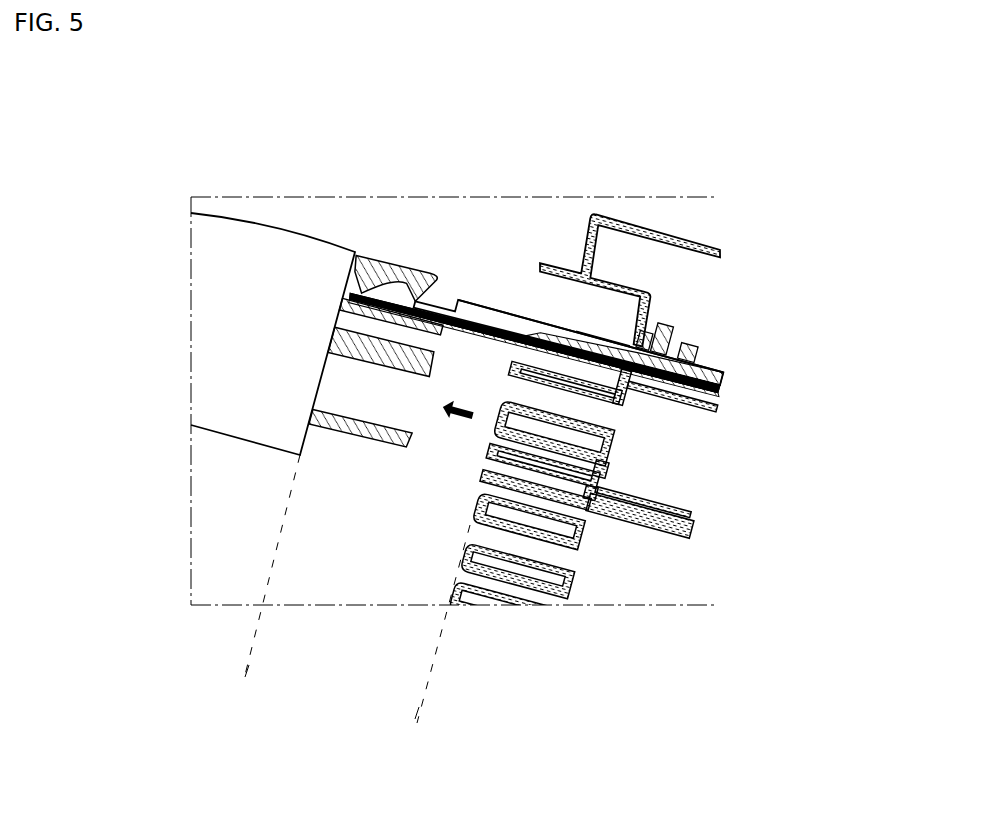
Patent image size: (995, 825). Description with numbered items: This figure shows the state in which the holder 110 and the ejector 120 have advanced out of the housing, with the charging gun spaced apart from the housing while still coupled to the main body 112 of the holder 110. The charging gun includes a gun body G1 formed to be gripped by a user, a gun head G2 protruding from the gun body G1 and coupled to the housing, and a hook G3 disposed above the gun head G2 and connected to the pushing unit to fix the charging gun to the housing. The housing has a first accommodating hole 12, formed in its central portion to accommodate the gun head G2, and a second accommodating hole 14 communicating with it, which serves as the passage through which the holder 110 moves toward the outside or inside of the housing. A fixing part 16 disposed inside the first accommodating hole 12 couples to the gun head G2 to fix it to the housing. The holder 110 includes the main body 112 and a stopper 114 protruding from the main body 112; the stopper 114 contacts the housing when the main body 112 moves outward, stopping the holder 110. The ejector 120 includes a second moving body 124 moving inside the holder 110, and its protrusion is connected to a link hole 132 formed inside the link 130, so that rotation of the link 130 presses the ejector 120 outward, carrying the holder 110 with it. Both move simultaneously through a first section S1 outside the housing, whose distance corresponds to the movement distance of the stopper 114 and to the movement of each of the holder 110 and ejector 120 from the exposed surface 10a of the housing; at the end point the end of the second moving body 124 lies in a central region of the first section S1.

The gun body G1 is at (222, 317).
The gun head G2 is at (360, 428).
The hook G3 is at (383, 263).
The exposed surface 10a is at (501, 402).
The main body 112 is at (497, 314).
The holder 110 is at (589, 239).
The first accommodating hole 12 is at (561, 294).
The second accommodating hole 14 is at (610, 347).
The link 130 is at (659, 323).
The stopper 114 is at (680, 337).
The link hole 132 is at (686, 345).
The second moving body 124 is at (720, 381).
The ejector 120 is at (579, 355).
The fixing part 16 is at (617, 428).
The first section S1 is at (252, 668).